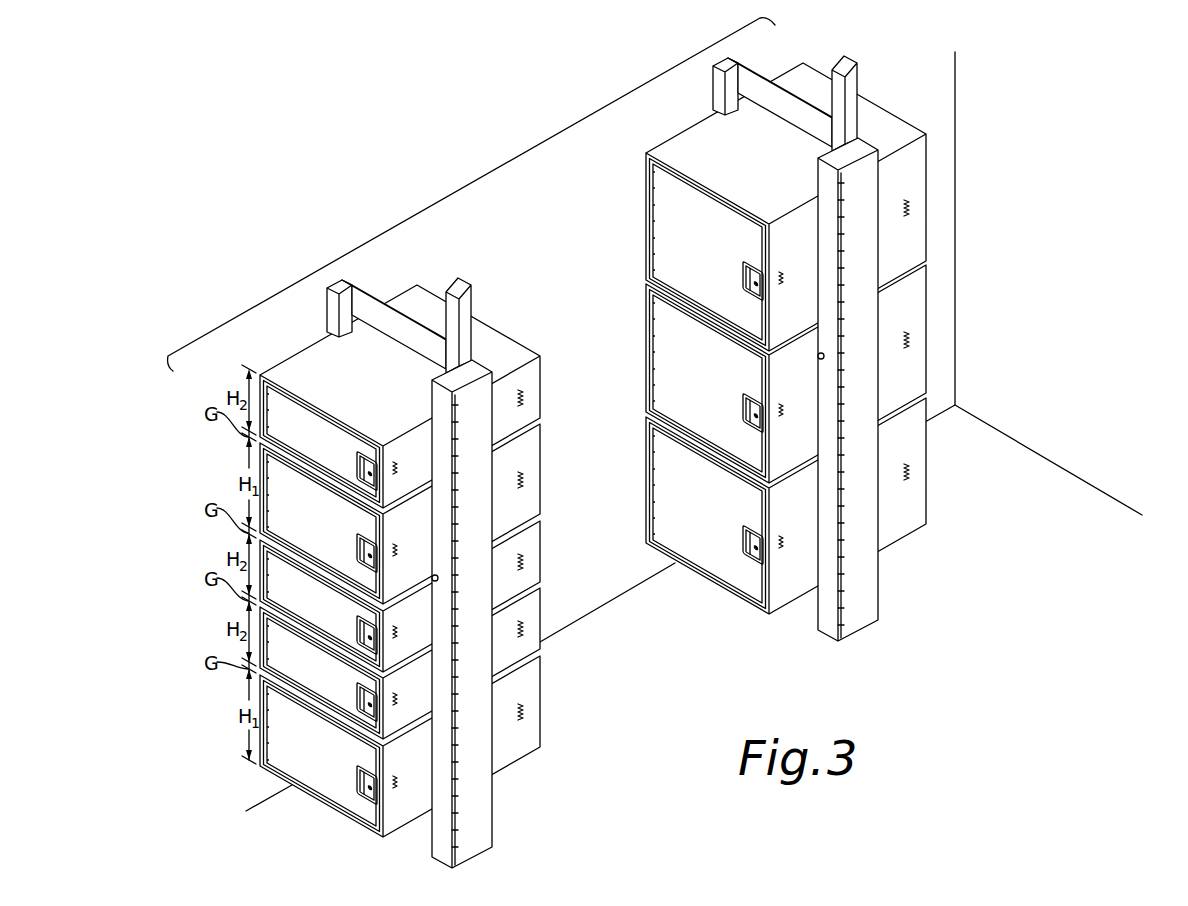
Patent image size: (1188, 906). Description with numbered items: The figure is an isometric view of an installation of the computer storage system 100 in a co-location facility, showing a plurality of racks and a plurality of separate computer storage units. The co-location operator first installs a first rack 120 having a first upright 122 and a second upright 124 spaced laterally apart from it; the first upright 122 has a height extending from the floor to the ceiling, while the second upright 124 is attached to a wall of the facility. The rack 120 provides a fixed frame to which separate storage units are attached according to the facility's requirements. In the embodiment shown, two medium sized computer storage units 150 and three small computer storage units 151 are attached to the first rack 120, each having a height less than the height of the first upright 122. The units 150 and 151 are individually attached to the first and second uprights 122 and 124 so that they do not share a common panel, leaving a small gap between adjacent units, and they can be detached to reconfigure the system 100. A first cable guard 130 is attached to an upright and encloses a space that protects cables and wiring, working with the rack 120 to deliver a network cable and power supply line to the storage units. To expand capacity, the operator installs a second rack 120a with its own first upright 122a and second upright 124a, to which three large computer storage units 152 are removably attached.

The computer storage system 100 is at (468, 180).
The first rack 120 is at (391, 303).
The first upright 122 is at (472, 292).
The second upright 124 is at (327, 314).
The first cable guard 130 is at (490, 367).
The medium sized computer storage unit 150 is at (540, 472).
The small computer storage unit 151 is at (540, 393).
The second rack 120a is at (775, 75).
The first upright of second rack 122a is at (858, 83).
The second upright of second rack 124a is at (713, 95).
The large computer storage unit 152 is at (926, 193).